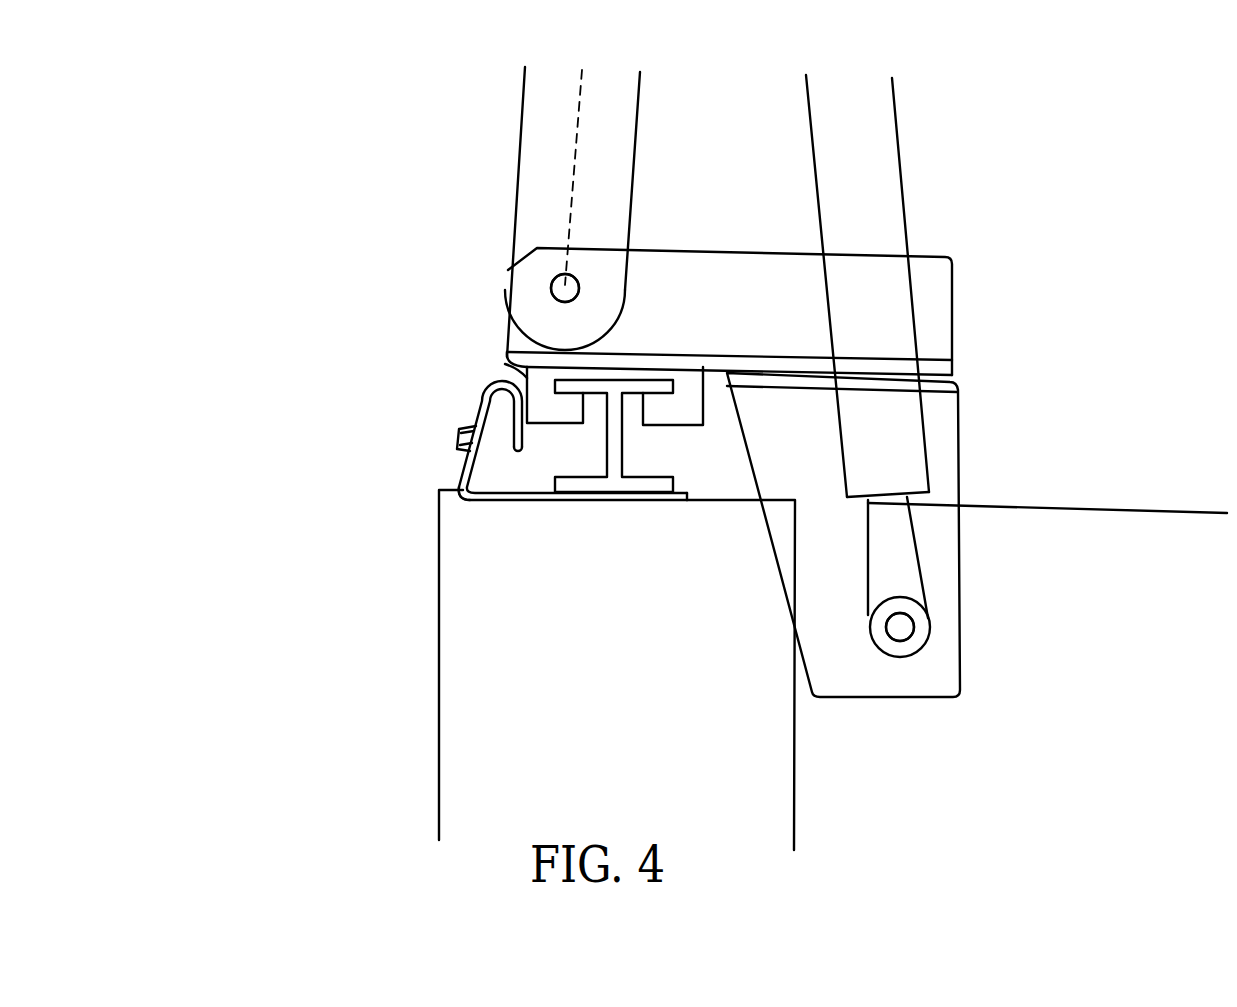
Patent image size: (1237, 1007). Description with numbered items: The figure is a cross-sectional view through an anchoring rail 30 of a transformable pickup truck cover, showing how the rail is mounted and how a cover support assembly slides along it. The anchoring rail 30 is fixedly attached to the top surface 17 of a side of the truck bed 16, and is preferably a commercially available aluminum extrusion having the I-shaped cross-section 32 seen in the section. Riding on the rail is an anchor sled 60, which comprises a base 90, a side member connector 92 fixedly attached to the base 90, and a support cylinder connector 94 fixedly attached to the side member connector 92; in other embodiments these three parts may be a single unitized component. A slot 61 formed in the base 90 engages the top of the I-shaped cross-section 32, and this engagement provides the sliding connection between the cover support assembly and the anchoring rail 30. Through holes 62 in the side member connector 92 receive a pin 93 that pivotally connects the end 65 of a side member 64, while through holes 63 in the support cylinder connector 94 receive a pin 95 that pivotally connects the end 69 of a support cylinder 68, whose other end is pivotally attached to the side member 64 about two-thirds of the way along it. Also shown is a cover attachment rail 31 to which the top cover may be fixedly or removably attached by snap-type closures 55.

The bed 16 is at (437, 718).
The top surface 17 is at (452, 490).
The anchoring rail 30 is at (337, 338).
The cover attachment rail 31 is at (478, 400).
The I-shaped cross-section 32 is at (612, 450).
The snap-type closures 55 is at (457, 447).
The anchor sled 60 is at (512, 357).
The slot 61 is at (505, 365).
The through holes 62 is at (548, 287).
The through holes 63 is at (902, 627).
The side member 64 is at (545, 105).
The end 65 is at (547, 322).
The support cylinder 68 is at (867, 155).
The end 69 is at (915, 647).
The base 90 is at (688, 410).
The side member connector 92 is at (943, 353).
The pin 93 is at (565, 288).
The support cylinder connector 94 is at (952, 405).
The pin 95 is at (900, 627).